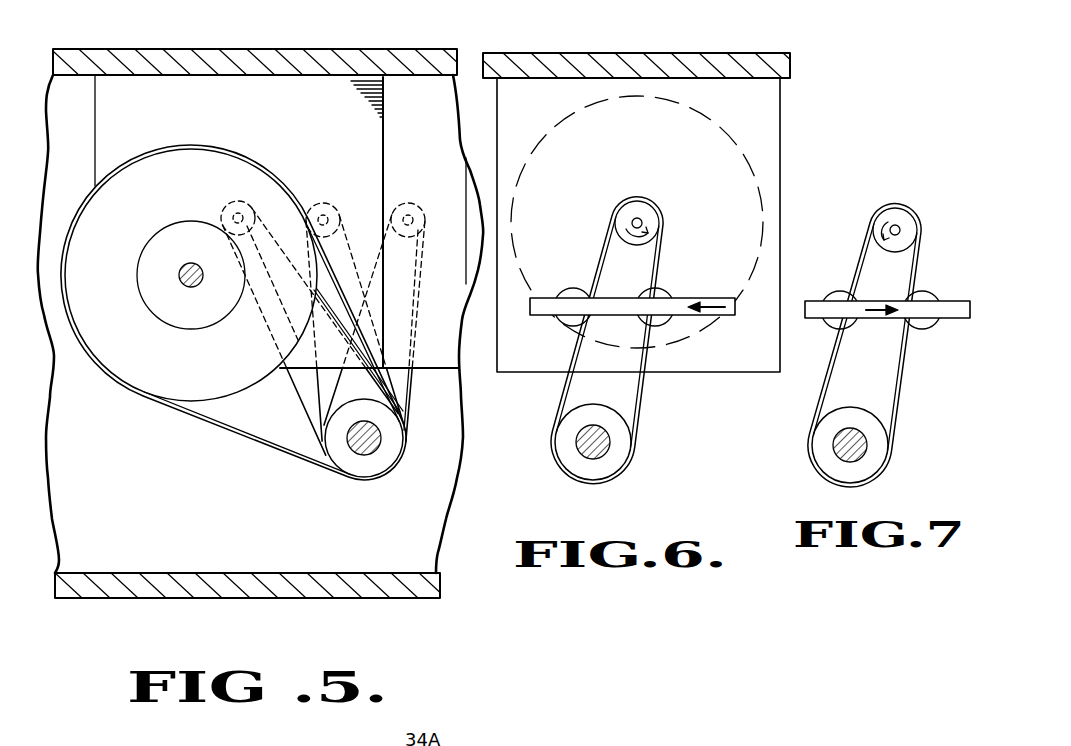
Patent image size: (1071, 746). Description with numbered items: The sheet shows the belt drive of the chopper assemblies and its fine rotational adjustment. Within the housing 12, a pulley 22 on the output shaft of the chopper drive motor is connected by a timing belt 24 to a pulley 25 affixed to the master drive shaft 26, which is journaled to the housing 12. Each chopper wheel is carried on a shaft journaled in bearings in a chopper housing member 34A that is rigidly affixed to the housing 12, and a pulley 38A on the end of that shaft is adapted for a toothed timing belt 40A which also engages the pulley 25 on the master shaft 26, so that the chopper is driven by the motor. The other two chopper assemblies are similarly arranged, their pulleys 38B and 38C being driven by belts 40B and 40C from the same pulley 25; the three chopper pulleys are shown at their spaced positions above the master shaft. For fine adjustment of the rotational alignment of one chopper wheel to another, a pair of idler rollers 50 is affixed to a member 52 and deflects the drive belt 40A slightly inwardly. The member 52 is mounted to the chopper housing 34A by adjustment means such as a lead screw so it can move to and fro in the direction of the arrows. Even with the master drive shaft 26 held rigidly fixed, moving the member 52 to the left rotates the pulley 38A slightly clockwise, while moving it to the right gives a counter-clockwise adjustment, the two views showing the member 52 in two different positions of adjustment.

In FIG. 5, the housing 12 is at (342, 52).
In FIG. 6, the housing 12 is at (602, 55).
In FIG. 5, the pulley 22 is at (140, 392).
In FIG. 5, the timing belt 24 is at (198, 420).
In FIG. 5, the pulley 25 is at (372, 470).
In FIG. 6, the pulley 25 is at (612, 468).
In FIG. 7, the pulley 25 is at (884, 470).
In FIG. 5, the master drive shaft 26 is at (356, 452).
In FIG. 6, the master drive shaft 26 is at (582, 450).
In FIG. 7, the master drive shaft 26 is at (842, 455).
In FIG. 6, the chopper housing member 34A is at (782, 120).
In FIG. 5, the pulley 38A is at (415, 203).
In FIG. 6, the pulley 38A is at (643, 210).
In FIG. 7, the pulley 38A is at (903, 212).
In FIG. 5, the pulley 38B is at (333, 202).
In FIG. 5, the pulley 38C is at (246, 200).
In FIG. 5, the toothed timing belt 40A is at (410, 395).
In FIG. 6, the toothed timing belt 40A is at (561, 395).
In FIG. 7, the toothed timing belt 40A is at (903, 400).
In FIG. 5, the belt 40B is at (312, 392).
In FIG. 5, the belt 40C is at (268, 342).
In FIG. 6, the idler rollers 50 is at (574, 290).
In FIG. 7, the idler rollers 50 is at (844, 292).
In FIG. 6, the member 52 is at (728, 318).
In FIG. 7, the member 52 is at (956, 322).